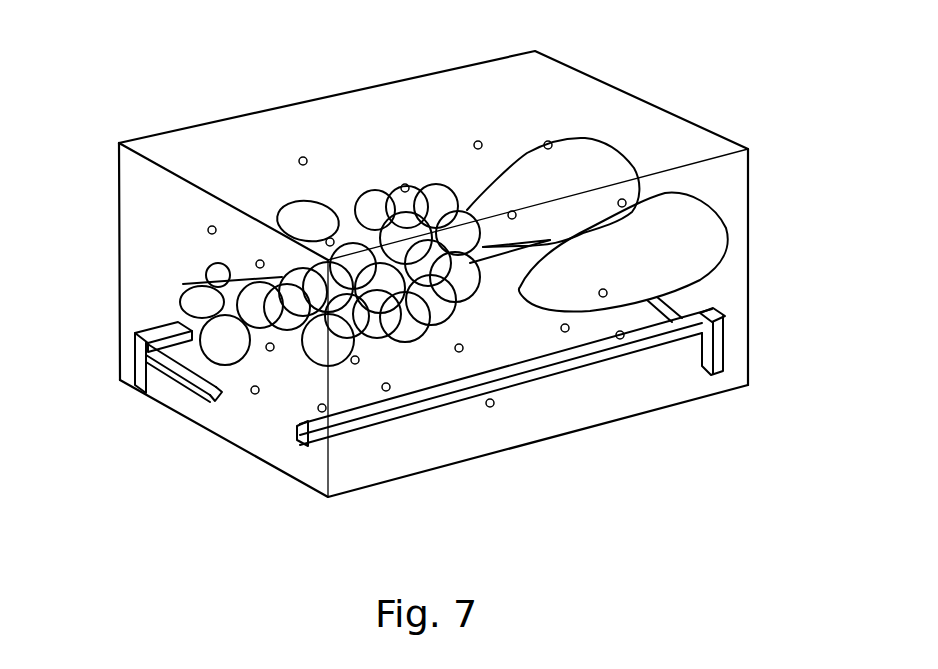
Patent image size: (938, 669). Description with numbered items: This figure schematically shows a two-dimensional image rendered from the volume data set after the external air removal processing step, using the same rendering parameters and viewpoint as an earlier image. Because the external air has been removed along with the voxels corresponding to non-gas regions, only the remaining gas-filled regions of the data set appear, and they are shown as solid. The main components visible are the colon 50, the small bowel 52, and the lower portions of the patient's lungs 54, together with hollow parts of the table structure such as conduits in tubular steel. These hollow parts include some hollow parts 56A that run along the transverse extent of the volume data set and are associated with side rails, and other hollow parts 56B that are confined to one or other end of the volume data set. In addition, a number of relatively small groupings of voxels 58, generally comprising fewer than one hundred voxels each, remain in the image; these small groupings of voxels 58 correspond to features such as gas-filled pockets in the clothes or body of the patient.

The colon 50 is at (413, 323).
The small bowel 52 is at (302, 212).
The lower portions of the patient's lungs 54 is at (620, 170).
The hollow parts in the table structure 56A is at (153, 327).
The hollow parts in the table structure 56B is at (206, 394).
The small groupings of voxels 58 is at (207, 230).